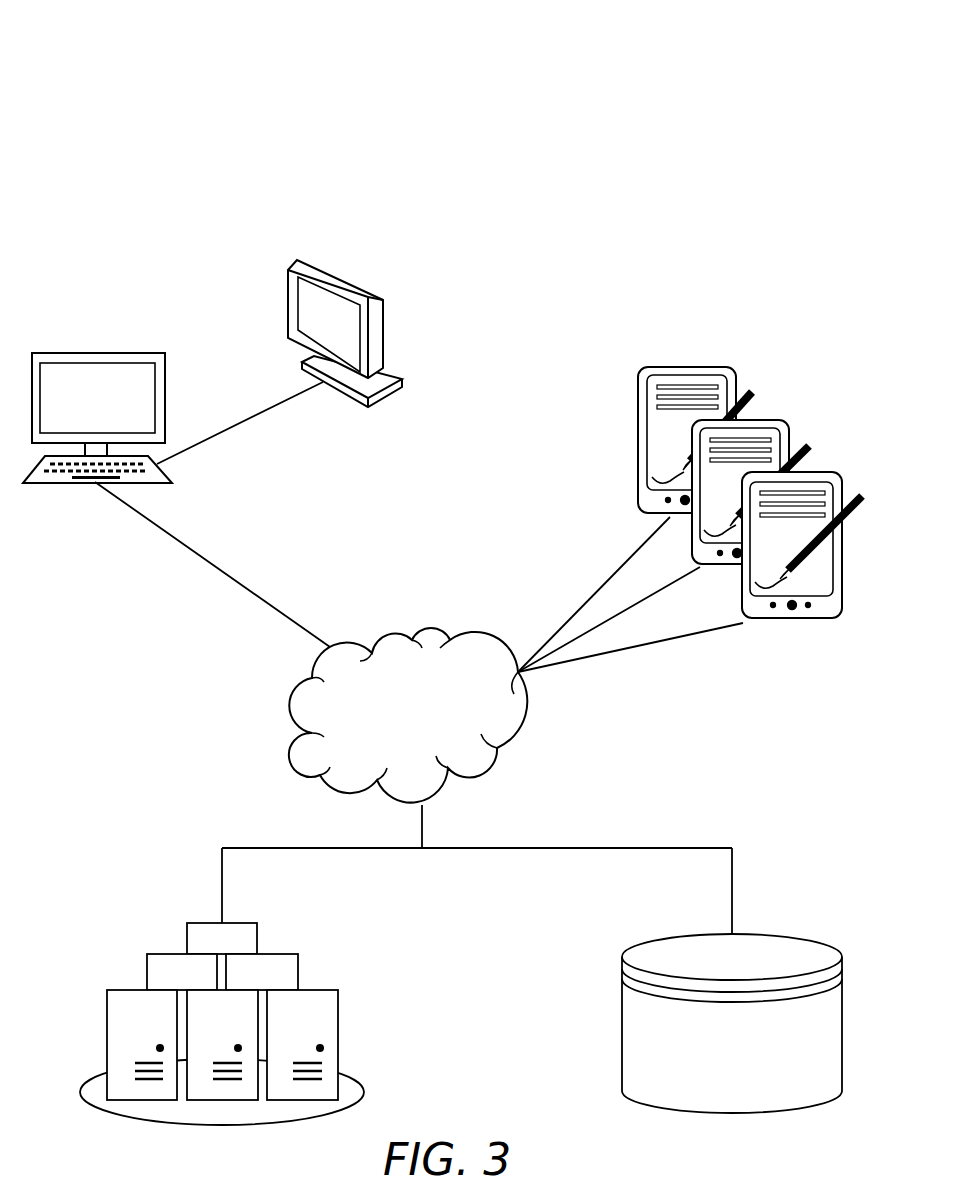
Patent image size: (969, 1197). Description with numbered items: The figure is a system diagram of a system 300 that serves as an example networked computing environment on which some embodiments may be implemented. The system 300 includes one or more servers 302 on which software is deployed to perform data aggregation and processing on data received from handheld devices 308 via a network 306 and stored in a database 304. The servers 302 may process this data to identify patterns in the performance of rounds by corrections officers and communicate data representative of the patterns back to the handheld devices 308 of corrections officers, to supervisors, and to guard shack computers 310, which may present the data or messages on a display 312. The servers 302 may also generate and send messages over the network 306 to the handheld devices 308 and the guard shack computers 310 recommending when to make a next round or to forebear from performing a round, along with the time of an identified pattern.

The system 300 is at (262, 108).
The servers 302 is at (323, 990).
The database 304 is at (772, 952).
The network 306 is at (430, 627).
The handheld devices 308 is at (781, 347).
The guard shack computers 310 is at (110, 353).
The display 312 is at (368, 293).